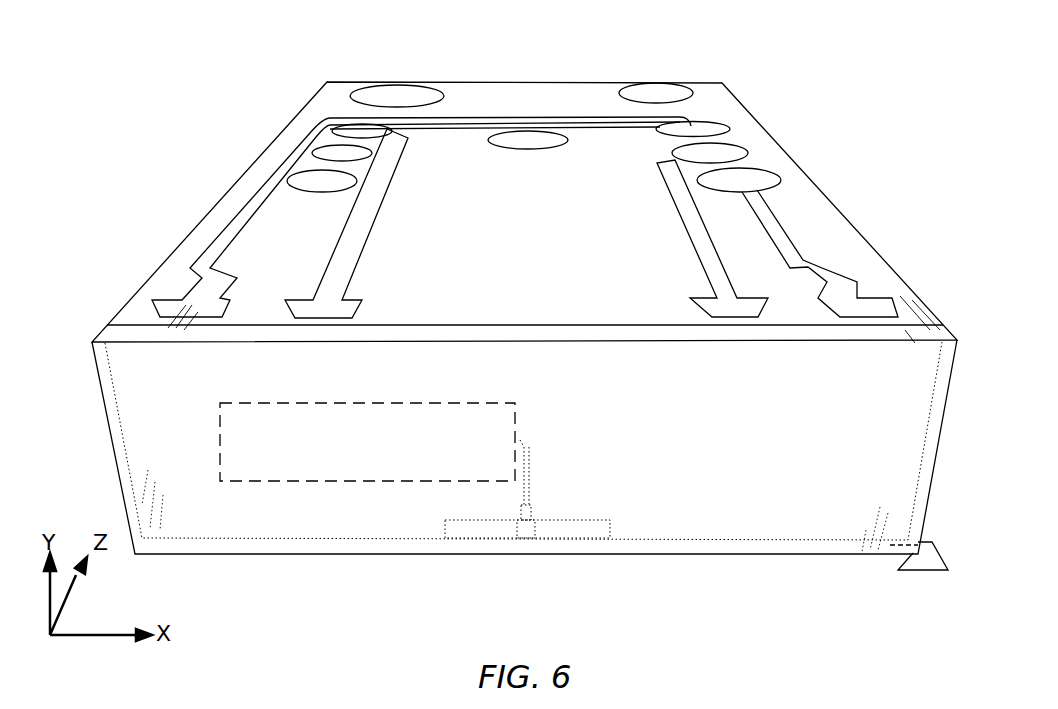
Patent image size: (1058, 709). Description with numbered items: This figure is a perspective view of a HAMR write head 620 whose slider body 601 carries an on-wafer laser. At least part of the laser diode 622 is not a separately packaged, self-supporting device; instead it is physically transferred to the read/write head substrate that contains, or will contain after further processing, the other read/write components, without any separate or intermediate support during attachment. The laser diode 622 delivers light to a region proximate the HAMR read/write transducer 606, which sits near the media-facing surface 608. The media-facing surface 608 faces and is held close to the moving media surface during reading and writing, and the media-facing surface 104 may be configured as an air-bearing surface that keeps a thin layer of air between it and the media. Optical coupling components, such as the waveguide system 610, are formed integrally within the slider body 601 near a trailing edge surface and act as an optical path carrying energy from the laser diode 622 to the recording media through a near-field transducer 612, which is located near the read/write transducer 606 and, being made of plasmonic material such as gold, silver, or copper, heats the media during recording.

The slider body 601 is at (300, 112).
The housing 104 is at (203, 527).
The HAMR write head 620 is at (854, 182).
The laser diode 622 is at (373, 425).
The waveguide system 610 is at (528, 473).
The HAMR read/write transducer 606 is at (533, 541).
The near-field transducer 612 is at (523, 541).
The media-facing surface 608 is at (936, 574).